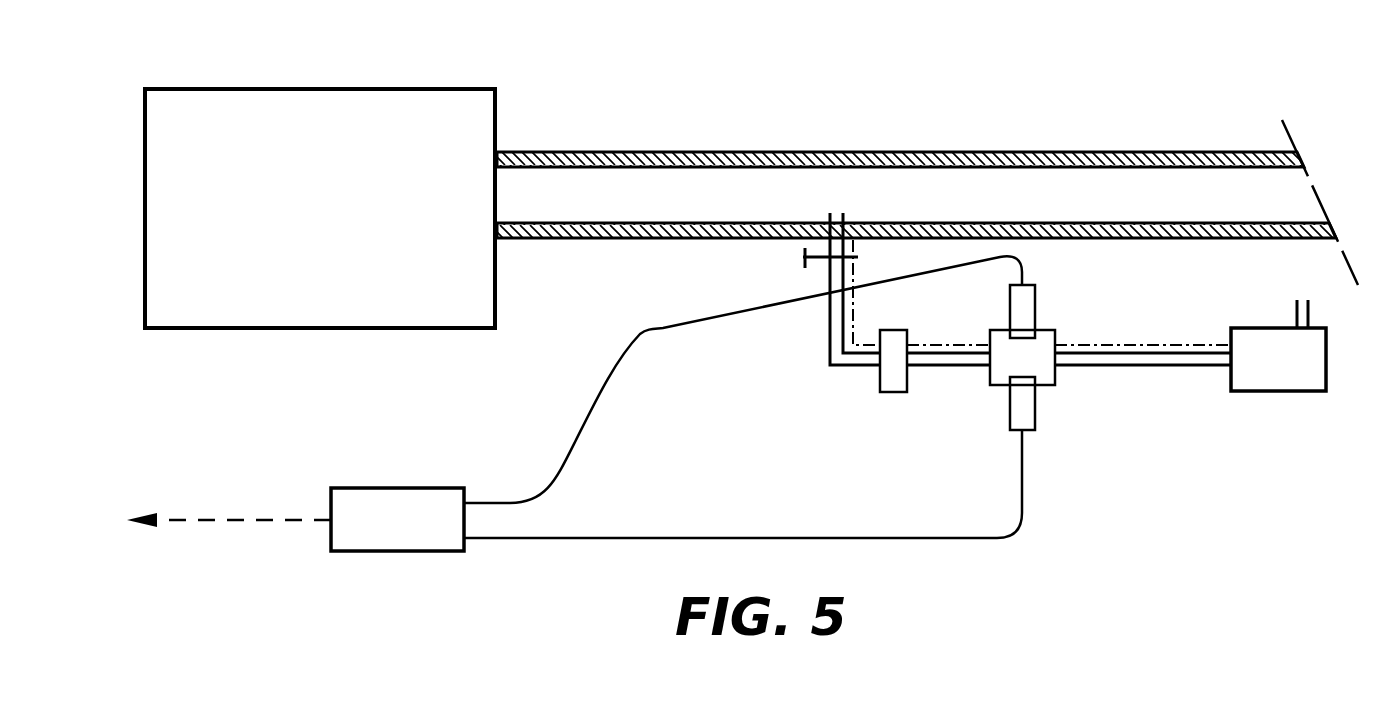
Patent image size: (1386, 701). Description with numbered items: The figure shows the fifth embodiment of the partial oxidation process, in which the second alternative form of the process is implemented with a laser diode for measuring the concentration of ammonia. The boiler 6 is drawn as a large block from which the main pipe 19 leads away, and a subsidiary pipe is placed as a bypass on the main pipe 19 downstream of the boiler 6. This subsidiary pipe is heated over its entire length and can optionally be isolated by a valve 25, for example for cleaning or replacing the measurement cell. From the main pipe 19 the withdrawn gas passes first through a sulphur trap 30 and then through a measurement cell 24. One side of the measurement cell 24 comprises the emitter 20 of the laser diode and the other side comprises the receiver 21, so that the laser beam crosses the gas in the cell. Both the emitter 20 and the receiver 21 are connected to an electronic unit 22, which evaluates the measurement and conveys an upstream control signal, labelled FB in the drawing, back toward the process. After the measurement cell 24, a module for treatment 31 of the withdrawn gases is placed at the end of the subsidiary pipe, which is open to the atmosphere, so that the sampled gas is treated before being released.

The boiler 6 is at (307, 219).
The main pipe 19 is at (697, 150).
The valve 25 is at (796, 259).
The sulphur trap 30 is at (871, 381).
The measurement cell 24 is at (1060, 327).
The emitter 20 is at (1044, 290).
The receiver 21 is at (1040, 431).
The module for treatment 31 is at (1262, 372).
The electronic unit 22 is at (382, 536).